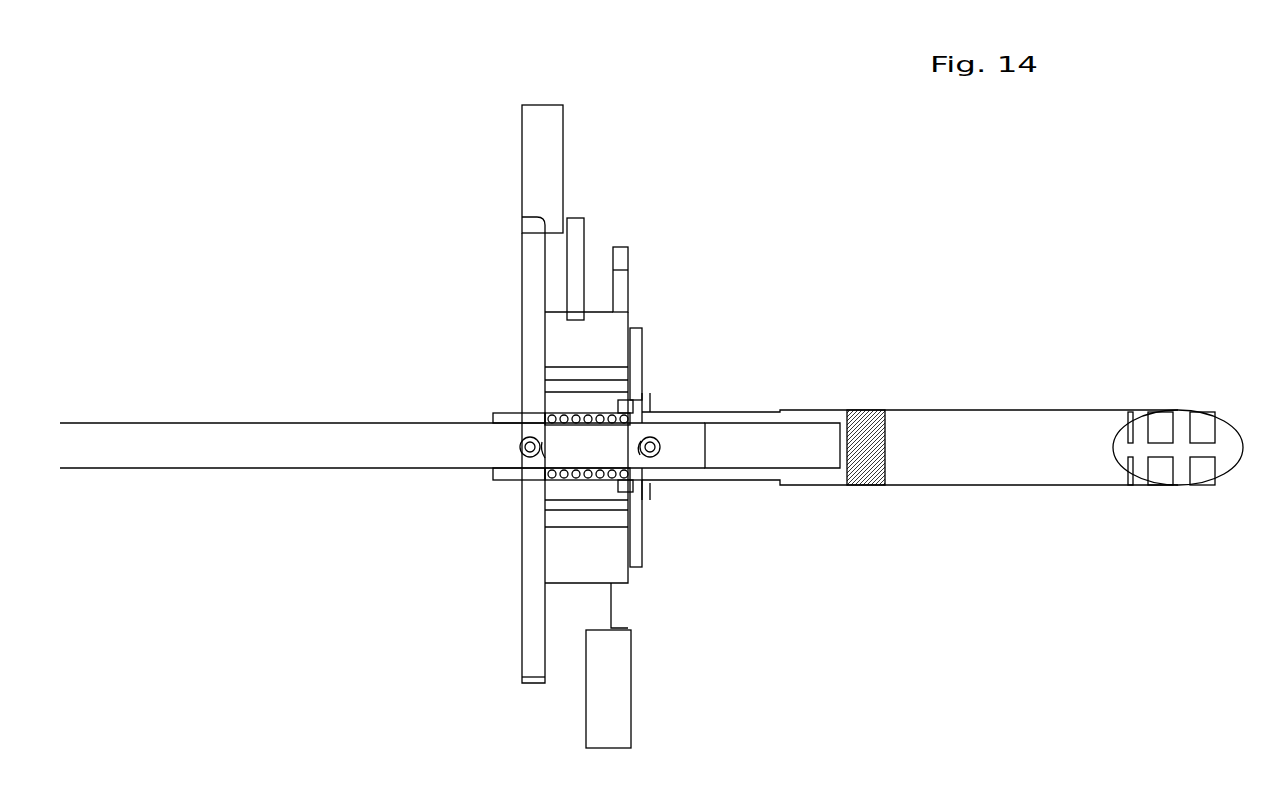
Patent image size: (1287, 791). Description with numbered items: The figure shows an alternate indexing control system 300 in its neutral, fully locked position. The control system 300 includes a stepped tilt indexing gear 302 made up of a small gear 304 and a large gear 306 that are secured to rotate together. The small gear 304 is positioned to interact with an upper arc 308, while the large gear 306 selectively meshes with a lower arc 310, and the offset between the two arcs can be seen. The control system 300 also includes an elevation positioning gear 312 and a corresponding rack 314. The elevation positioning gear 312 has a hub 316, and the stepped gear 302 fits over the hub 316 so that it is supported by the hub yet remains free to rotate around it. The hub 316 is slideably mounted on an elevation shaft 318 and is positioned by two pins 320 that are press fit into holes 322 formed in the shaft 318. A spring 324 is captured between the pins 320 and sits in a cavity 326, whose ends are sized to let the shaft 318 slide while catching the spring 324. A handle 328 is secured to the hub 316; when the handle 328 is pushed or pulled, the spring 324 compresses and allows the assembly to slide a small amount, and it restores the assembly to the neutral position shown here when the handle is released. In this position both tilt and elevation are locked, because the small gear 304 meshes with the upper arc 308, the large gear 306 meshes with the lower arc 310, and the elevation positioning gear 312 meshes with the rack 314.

The indexing control system 300 is at (696, 209).
The stepped tilt indexing gear 302 is at (640, 306).
The small gear 304 is at (587, 312).
The large gear 306 is at (628, 264).
The upper arc 308 is at (585, 228).
The lower arc 310 is at (630, 660).
The elevation positioning gear 312 is at (523, 265).
The rack 314 is at (563, 122).
The hub 316 is at (572, 367).
The elevation shaft 318 is at (213, 423).
The pins 320 is at (520, 447).
The holes 322 is at (545, 458).
The spring 324 is at (565, 414).
The cavity 326 is at (548, 472).
The handle 328 is at (966, 410).